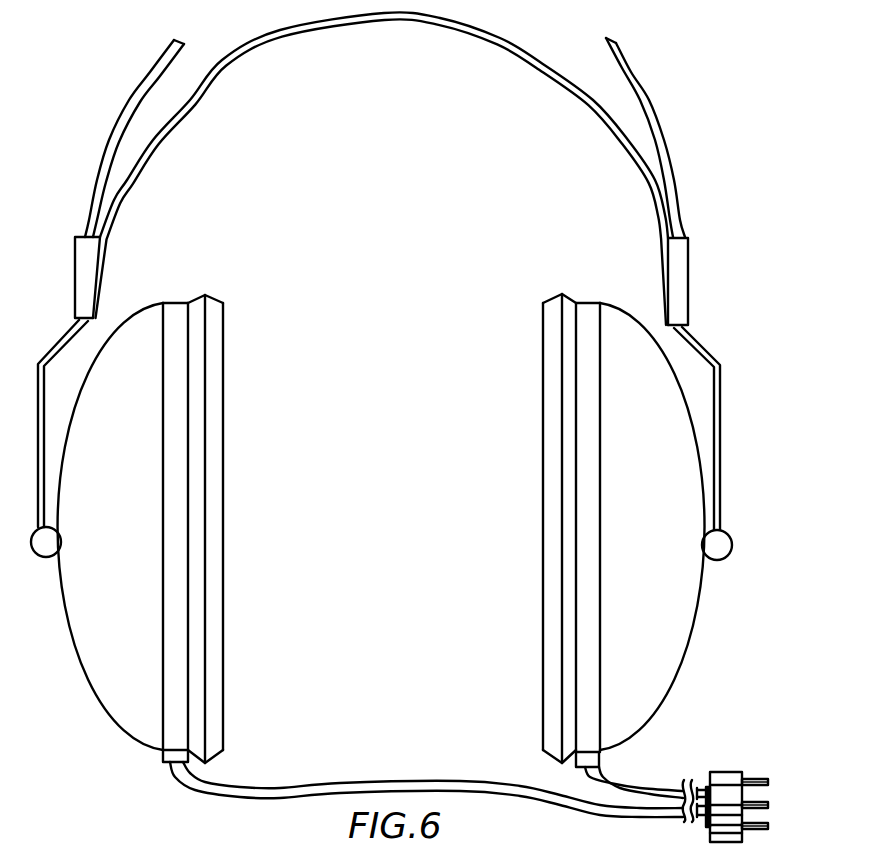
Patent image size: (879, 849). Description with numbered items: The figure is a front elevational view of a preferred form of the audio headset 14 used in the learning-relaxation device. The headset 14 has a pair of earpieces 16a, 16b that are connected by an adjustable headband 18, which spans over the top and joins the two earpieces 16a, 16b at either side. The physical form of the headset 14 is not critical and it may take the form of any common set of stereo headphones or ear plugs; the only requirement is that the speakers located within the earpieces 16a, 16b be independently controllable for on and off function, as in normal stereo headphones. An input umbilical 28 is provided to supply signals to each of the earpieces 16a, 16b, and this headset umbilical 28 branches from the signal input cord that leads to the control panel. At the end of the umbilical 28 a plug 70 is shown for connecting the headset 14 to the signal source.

The audio headset 14 is at (232, 418).
The headband 18 is at (381, 20).
The earpiece 16a is at (623, 335).
The earpiece 16b is at (146, 328).
The headset umbilical cord 28 is at (307, 797).
The plug 70 is at (722, 792).